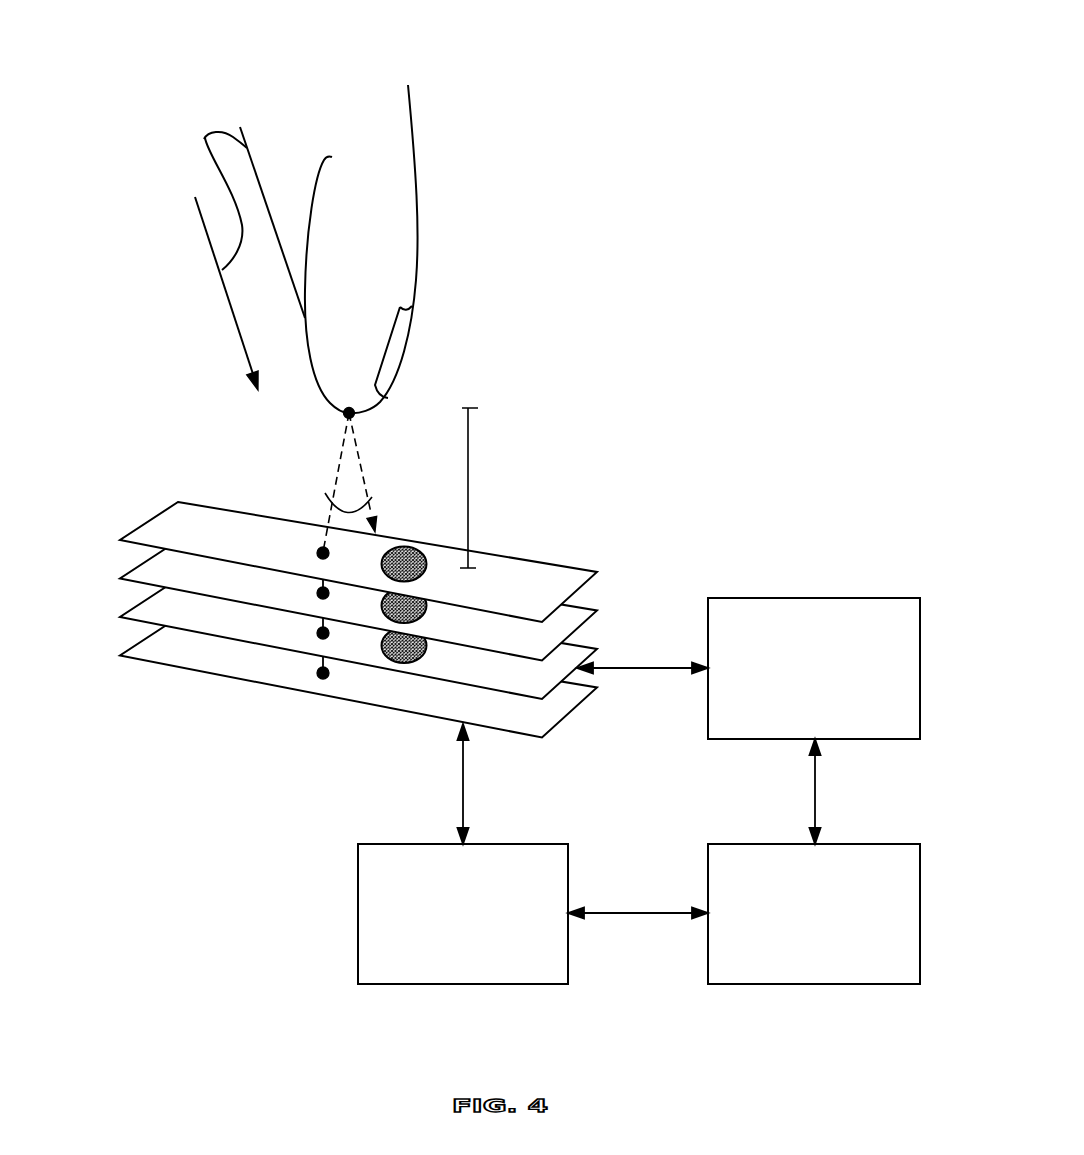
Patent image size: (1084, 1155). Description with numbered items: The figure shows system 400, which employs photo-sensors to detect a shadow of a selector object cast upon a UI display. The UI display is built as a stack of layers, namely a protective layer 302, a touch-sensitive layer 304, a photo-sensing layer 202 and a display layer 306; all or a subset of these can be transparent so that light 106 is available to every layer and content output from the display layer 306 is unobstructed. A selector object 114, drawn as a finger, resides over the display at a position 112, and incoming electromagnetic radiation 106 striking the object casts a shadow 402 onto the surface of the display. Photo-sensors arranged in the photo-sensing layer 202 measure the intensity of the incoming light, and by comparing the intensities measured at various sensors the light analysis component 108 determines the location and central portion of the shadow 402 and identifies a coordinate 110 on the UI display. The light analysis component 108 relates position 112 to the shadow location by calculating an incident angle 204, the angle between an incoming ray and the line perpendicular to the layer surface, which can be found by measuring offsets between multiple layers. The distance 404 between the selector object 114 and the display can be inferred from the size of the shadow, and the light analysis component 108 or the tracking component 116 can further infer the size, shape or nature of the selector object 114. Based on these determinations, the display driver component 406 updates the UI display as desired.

The system 400 is at (888, 64).
The electromagnetic radiation 106 is at (204, 138).
The selector object 114 is at (415, 270).
The position 112 is at (353, 416).
The coordinate 110 is at (321, 550).
The incident angle 204 is at (345, 492).
The distance 404 is at (468, 482).
The shadow 402 is at (400, 553).
The protective layer 302 is at (136, 528).
The touch-sensitive layer 304 is at (136, 566).
The photo-sensing layer 202 is at (136, 605).
The display layer 306 is at (136, 647).
The light analysis component 108 is at (815, 598).
The tracking component 116 is at (743, 844).
The display driver component 406 is at (358, 912).